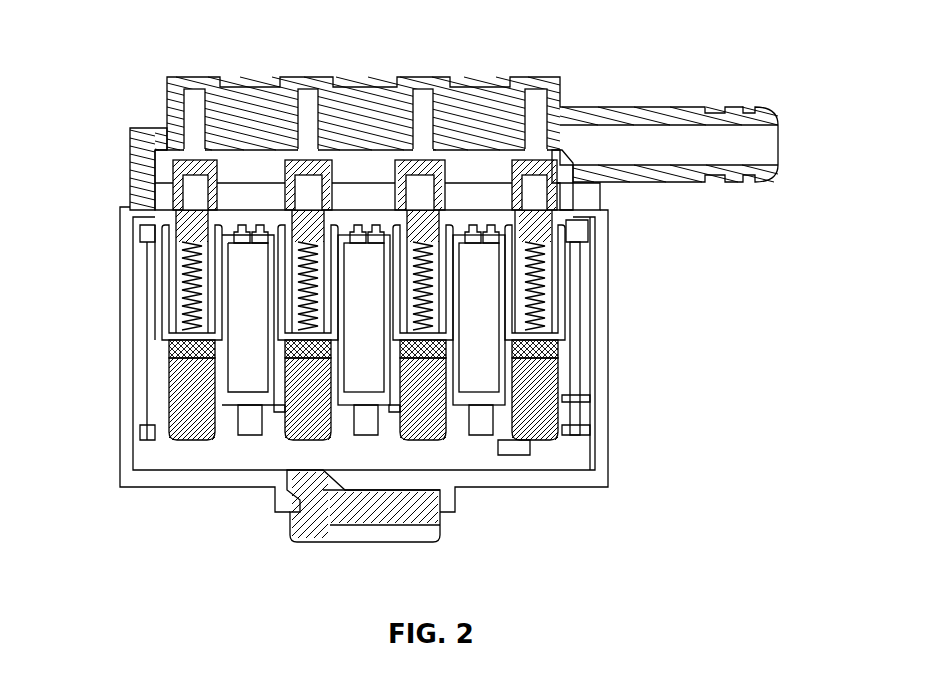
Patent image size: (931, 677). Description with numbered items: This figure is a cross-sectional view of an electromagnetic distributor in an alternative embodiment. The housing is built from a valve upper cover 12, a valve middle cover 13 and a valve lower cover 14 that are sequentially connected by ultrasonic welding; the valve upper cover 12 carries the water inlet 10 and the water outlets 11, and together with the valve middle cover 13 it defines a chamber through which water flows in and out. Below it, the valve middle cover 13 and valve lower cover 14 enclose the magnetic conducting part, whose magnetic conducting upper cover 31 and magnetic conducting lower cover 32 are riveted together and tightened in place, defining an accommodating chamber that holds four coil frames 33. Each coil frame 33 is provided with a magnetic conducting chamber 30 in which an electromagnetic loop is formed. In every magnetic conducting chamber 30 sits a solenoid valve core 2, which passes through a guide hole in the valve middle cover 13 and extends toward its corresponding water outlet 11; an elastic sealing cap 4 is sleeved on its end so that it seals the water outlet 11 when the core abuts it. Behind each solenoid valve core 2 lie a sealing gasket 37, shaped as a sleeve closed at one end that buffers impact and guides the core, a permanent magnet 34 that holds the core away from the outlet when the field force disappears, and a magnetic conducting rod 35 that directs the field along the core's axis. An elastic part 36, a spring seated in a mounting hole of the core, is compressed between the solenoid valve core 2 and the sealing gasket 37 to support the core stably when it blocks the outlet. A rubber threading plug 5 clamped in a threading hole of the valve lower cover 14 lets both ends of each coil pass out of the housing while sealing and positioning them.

The solenoid valve core 2 is at (190, 185).
The sealing cap 4 is at (554, 170).
The threading plug 5 is at (295, 520).
The water inlet 10 is at (760, 140).
The water outlet 11 is at (195, 120).
The valve upper cover 12 is at (265, 103).
The valve middle cover 13 is at (132, 207).
The valve lower cover 14 is at (128, 302).
The magnetic conducting chamber 30 is at (166, 385).
The magnetic conducting upper cover 31 is at (570, 250).
The magnetic conducting lower cover 32 is at (579, 290).
The coil frame 33 is at (567, 425).
The permanent magnet 34 is at (552, 347).
The magnetic conducting rod 35 is at (180, 428).
The elastic part 36 is at (180, 265).
The sealing gasket 37 is at (570, 330).